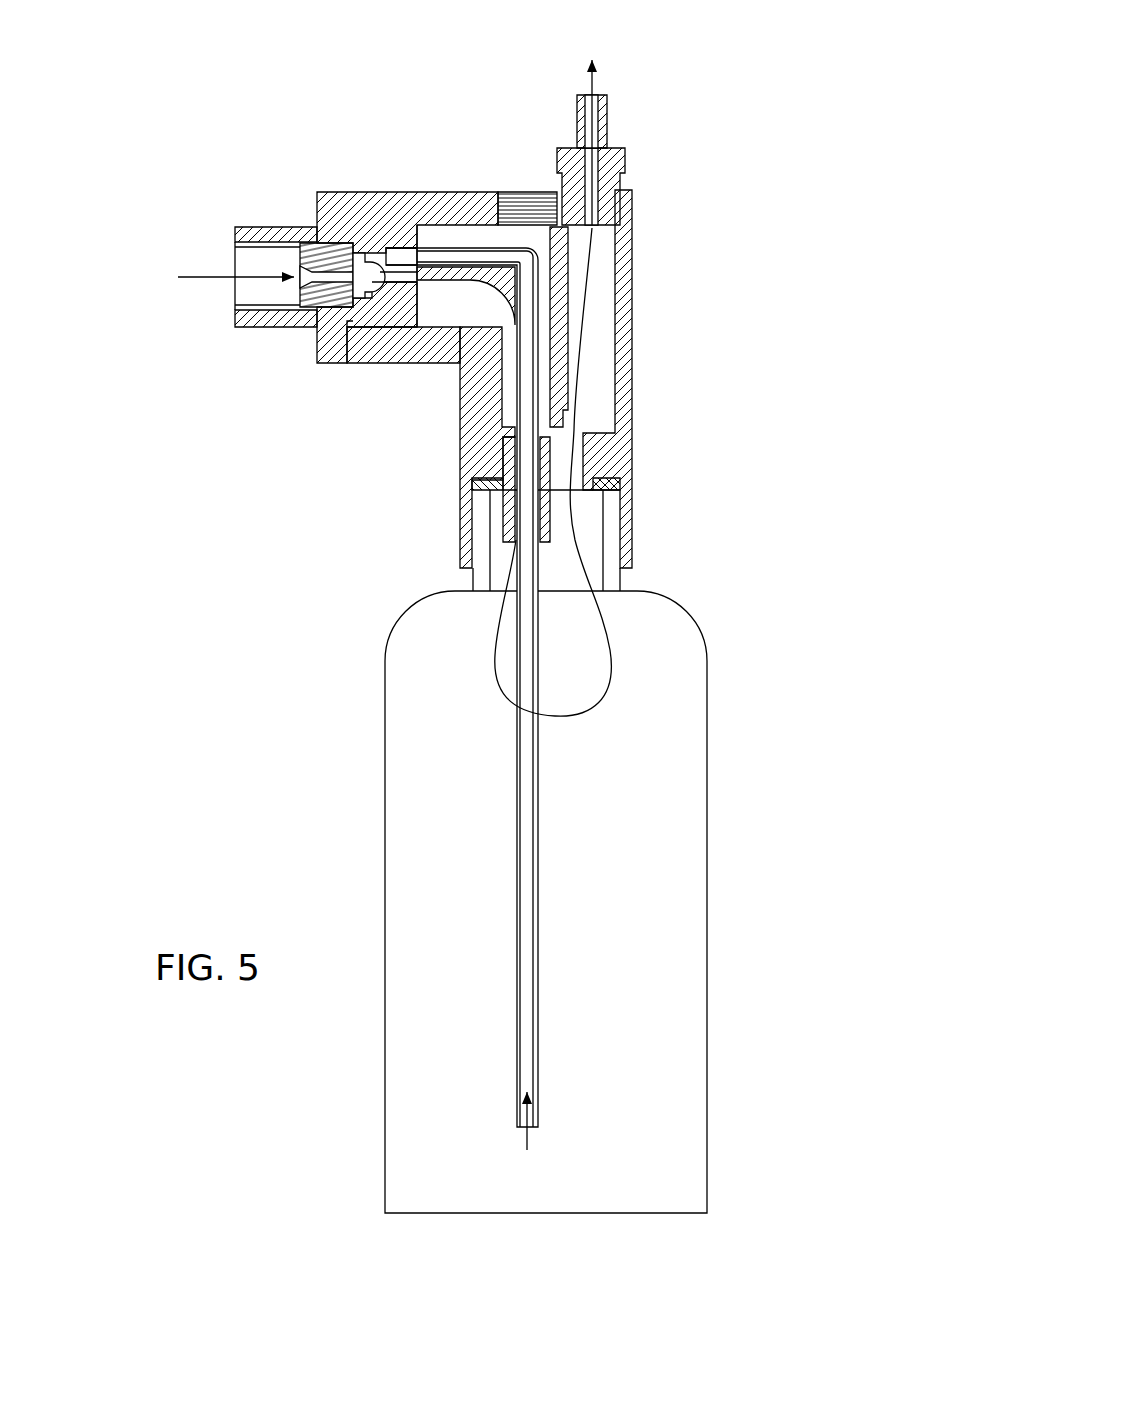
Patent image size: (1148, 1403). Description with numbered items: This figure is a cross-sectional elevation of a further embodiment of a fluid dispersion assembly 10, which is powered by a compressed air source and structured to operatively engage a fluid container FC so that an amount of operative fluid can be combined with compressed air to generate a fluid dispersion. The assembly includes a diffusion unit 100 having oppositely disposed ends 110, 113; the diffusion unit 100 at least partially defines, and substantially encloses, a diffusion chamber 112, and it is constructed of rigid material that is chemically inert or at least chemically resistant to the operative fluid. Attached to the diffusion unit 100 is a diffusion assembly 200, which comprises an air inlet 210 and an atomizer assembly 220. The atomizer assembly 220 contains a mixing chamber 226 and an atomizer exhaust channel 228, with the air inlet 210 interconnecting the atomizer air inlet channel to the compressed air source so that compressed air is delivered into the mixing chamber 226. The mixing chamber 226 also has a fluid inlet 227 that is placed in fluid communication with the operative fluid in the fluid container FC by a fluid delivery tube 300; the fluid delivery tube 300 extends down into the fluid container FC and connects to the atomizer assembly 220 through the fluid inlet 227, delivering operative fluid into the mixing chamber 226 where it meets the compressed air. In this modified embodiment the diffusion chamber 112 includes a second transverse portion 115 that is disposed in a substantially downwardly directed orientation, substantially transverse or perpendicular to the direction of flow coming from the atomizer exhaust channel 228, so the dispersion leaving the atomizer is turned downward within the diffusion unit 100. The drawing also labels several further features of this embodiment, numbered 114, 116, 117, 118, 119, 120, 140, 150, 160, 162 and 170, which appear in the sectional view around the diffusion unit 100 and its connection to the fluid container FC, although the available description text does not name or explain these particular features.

The fluid dispersion assembly 10 is at (200, 126).
The diffusion unit 100 is at (648, 397).
The end of the diffusion unit 110 is at (640, 450).
The diffusion chamber 112 is at (497, 315).
The end of the diffusion unit 113 is at (380, 190).
The lower body block 114 is at (413, 337).
The second transverse portion of the diffusion chamber 115 is at (507, 410).
The inner tube wall 116 is at (543, 425).
The outer housing wall 117 is at (604, 305).
The mist outlet fitting 118 is at (627, 160).
The outlet nipple 119 is at (576, 100).
The tube sleeve 120 is at (500, 518).
The bottle neck connection 140 is at (640, 563).
The air passage 150 is at (370, 336).
The threaded bore 160 is at (511, 222).
The mist chamber 162 is at (548, 231).
The cap plate 170 is at (630, 498).
The diffusion assembly 200 is at (298, 344).
The air inlet 210 is at (246, 295).
The atomizer assembly 220 is at (303, 252).
The mixing chamber 226 is at (349, 232).
The fluid inlet 227 is at (376, 256).
The atomizer exhaust channel 228 is at (438, 264).
The fluid delivery tube 300 is at (539, 953).
The fluid container FC is at (385, 740).